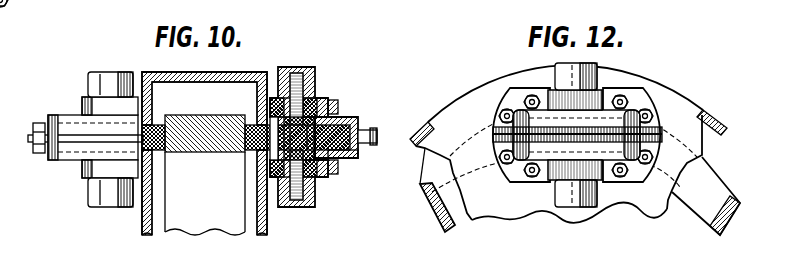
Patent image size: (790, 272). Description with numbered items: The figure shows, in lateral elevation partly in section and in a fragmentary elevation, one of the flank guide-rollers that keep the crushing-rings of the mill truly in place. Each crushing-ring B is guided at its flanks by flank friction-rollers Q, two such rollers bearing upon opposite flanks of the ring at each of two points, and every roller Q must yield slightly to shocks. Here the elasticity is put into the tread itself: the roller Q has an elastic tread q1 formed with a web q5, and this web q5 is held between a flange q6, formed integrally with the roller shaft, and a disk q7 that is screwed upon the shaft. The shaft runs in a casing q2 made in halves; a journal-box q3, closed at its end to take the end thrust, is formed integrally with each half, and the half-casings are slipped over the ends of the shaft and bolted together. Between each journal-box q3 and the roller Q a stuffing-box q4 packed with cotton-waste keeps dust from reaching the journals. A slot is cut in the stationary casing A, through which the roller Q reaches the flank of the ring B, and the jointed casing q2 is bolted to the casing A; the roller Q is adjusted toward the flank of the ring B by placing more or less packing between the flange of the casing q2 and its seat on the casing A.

In FIG. 10, the casing A is at (204, 142).
In FIG. 12, the casing A is at (461, 127).
In FIG. 10, the crushing-ring B is at (205, 175).
In FIG. 12, the crushing-ring B is at (446, 184).
In FIG. 10, the flank guide-roller Q is at (326, 160).
In FIG. 10, the elastic tread q1 is at (340, 128).
In FIG. 10, the casing q2 is at (344, 99).
In FIG. 12, the casing q2 is at (512, 174).
In FIG. 10, the journal-box q3 is at (322, 210).
In FIG. 12, the journal-box q3 is at (566, 192).
In FIG. 10, the stuffing-box q4 is at (96, 118).
In FIG. 12, the stuffing-box q4 is at (560, 165).
In FIG. 10, the web q5 is at (333, 158).
In FIG. 10, the flange q6 is at (318, 98).
In FIG. 10, the disk q7 is at (273, 150).